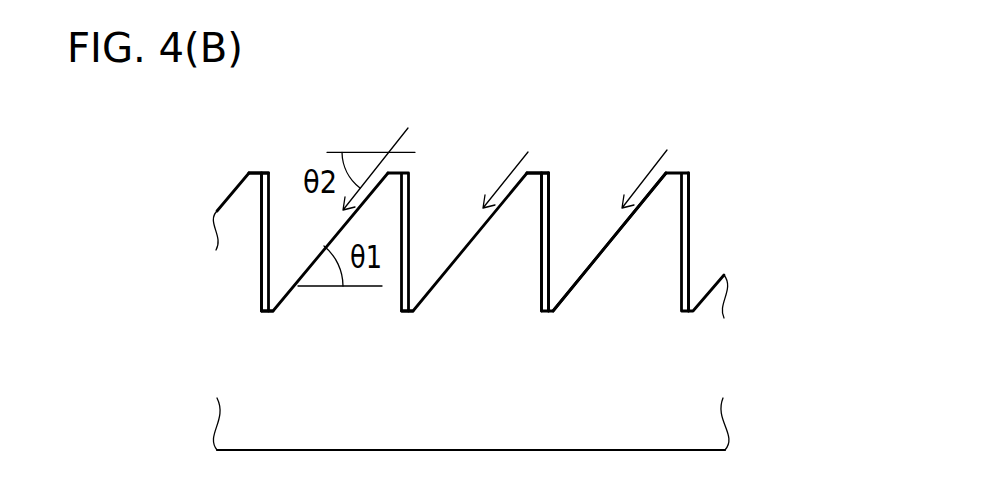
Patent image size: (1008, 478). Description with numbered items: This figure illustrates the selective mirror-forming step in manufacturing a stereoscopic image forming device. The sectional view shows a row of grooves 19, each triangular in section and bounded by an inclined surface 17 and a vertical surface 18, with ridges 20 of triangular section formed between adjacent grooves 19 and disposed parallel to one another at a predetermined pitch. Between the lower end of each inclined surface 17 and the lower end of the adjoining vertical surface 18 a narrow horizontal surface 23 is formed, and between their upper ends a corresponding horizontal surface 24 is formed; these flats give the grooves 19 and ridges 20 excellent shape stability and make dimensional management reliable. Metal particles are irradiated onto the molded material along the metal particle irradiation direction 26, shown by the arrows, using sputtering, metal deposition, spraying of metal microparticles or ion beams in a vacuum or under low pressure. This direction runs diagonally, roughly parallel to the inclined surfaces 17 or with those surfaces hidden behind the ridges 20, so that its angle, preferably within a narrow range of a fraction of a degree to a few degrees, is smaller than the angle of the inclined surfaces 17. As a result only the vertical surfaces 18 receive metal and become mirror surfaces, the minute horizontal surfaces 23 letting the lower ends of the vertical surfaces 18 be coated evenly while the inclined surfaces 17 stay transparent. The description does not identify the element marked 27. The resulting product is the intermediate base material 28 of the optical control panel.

The inclined surface 17 is at (462, 250).
The vertical surface 18 is at (263, 212).
The groove 19 is at (573, 225).
The ridge 20 is at (508, 243).
The horizontal surface 23 is at (277, 309).
The horizontal surface 24 is at (252, 172).
The metal particle irradiation direction 26 is at (400, 138).
The side wall portion 27 is at (548, 197).
The intermediate base material 28 is at (755, 359).